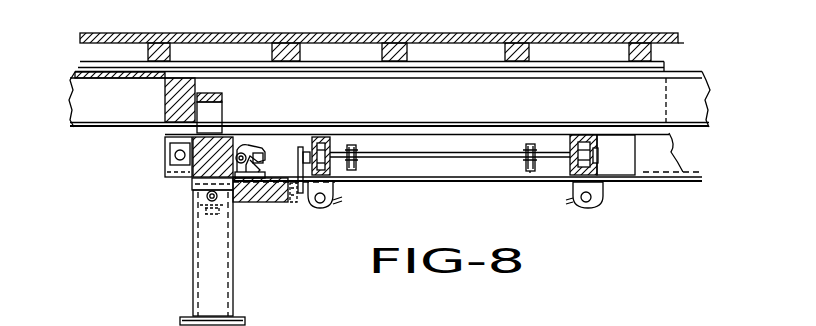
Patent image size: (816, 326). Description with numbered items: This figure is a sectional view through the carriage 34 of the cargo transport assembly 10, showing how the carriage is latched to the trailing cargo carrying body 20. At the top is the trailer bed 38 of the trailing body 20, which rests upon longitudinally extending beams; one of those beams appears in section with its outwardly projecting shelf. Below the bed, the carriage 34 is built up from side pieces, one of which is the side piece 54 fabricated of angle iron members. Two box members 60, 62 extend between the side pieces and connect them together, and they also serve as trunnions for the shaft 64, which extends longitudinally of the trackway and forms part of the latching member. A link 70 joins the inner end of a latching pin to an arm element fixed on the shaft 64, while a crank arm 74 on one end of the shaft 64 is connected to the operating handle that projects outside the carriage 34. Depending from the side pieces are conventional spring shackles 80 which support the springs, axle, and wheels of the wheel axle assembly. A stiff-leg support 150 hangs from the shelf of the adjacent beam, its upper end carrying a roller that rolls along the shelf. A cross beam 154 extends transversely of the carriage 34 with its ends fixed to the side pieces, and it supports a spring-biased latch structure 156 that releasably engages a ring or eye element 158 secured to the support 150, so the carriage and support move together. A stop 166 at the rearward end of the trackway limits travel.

The cargo bracing apparatus 10 is at (177, 321).
The trailing cargo carrying body 20 is at (391, 31).
The carriage 34 is at (475, 168).
The trailer bed 38 is at (529, 33).
The side piece 54 is at (627, 158).
The box member 60 is at (329, 136).
The box member 62 is at (582, 136).
The shaft 64 is at (435, 155).
The link 70 is at (534, 143).
The crank arm 74 is at (297, 162).
The spring shackle 80 is at (302, 193).
The support 150 is at (194, 244).
The cross beam 154 is at (268, 202).
The latch structure 156 is at (252, 143).
The eye element 158 is at (247, 143).
The stop 166 is at (165, 177).